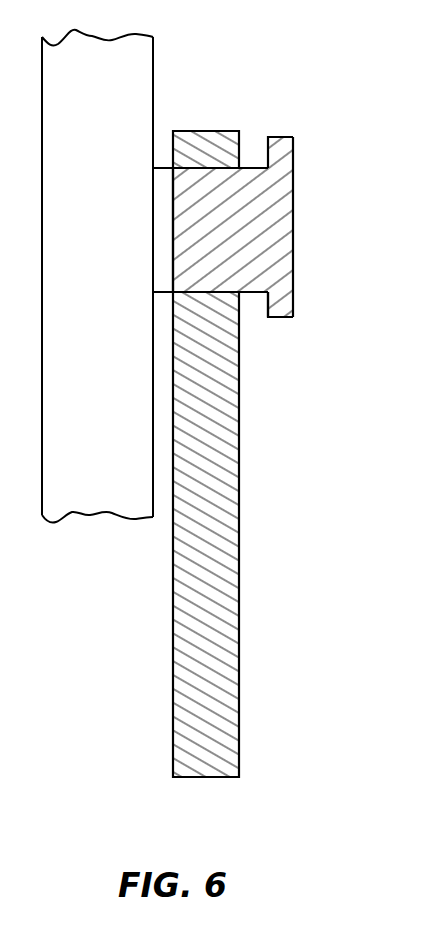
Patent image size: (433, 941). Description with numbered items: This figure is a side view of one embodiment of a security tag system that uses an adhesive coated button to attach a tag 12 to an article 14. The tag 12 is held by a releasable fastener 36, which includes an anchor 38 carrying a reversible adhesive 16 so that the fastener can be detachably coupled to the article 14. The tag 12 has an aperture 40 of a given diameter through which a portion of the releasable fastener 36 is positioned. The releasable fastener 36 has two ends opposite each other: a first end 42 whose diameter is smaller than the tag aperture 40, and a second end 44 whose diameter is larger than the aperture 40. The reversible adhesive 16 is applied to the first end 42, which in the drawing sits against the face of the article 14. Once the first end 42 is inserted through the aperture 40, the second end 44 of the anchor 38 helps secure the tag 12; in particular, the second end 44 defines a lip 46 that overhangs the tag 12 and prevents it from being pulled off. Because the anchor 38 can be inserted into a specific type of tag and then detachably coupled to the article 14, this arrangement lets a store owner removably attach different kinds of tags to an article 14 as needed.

The tag 12 is at (232, 710).
The article 14 is at (84, 91).
The reversible adhesive 16 is at (165, 177).
The releasable fastener 36 is at (293, 136).
The anchor 38 is at (278, 190).
The aperture 40 is at (240, 165).
The first end 42 is at (172, 219).
The second end 44 is at (294, 243).
The lip 46 is at (258, 296).